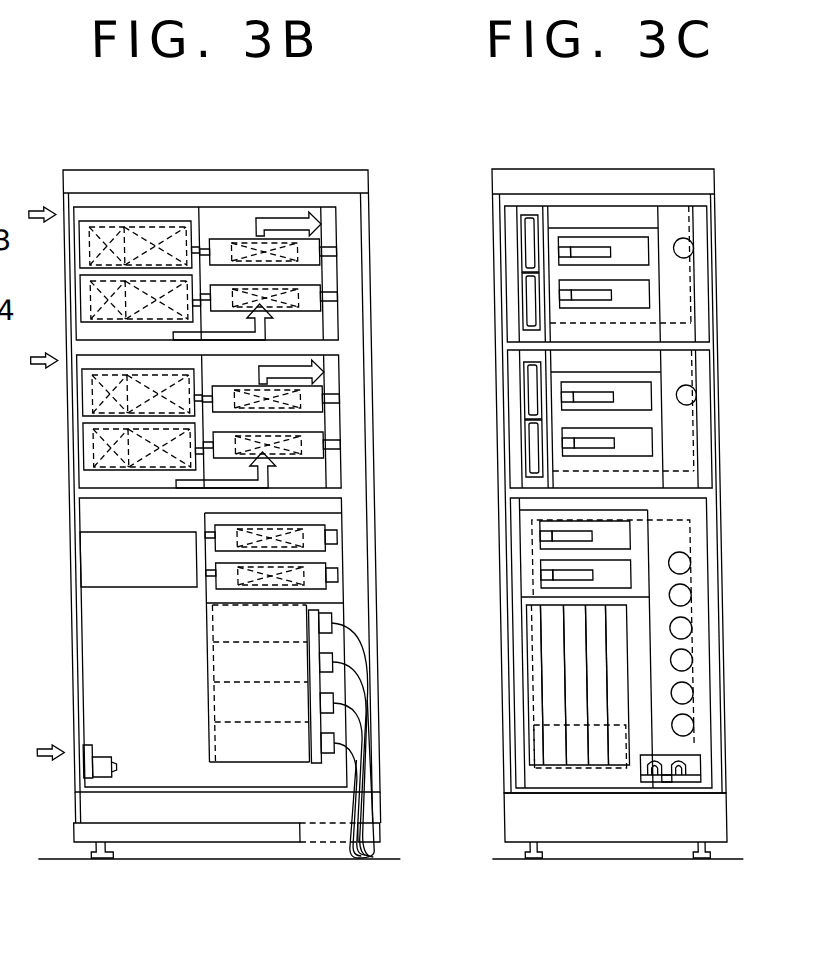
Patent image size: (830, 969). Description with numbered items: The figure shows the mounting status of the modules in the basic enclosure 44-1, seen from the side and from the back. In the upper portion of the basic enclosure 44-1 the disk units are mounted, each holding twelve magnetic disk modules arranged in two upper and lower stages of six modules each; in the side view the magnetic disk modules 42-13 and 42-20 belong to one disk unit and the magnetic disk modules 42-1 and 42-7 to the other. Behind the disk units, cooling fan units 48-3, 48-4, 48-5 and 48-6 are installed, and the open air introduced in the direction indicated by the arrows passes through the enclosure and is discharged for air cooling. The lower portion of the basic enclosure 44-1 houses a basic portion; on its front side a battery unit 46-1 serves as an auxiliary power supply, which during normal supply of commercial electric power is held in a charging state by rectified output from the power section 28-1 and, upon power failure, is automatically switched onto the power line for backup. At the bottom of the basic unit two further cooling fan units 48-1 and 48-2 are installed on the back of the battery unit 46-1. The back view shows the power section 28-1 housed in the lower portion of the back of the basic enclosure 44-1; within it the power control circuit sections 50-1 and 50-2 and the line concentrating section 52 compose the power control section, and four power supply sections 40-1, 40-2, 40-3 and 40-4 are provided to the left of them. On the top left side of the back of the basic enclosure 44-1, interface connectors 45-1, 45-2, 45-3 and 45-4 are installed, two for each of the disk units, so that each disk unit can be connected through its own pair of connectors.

In FIG. 3B, the basic enclosure 44-1 is at (442, 164).
In FIG. 3C, the basic enclosure 44-1 is at (793, 164).
In FIG. 3B, the magnetic disk module 42-13 is at (109, 225).
In FIG. 3B, the magnetic disk module 42-20 is at (80, 295).
In FIG. 3B, the magnetic disk module 42-1 is at (78, 393).
In FIG. 3B, the magnetic disk module 42-7 is at (78, 452).
In FIG. 3B, the cooling fan unit 48-6 is at (314, 252).
In FIG. 3C, the cooling fan unit 48-6 is at (644, 240).
In FIG. 3B, the cooling fan unit 48-5 is at (304, 302).
In FIG. 3C, the cooling fan unit 48-5 is at (637, 293).
In FIG. 3B, the cooling fan unit 48-4 is at (310, 396).
In FIG. 3C, the cooling fan unit 48-4 is at (641, 386).
In FIG. 3B, the cooling fan unit 48-3 is at (307, 443).
In FIG. 3C, the cooling fan unit 48-3 is at (630, 442).
In FIG. 3B, the cooling fan unit 48-1 is at (312, 538).
In FIG. 3C, the cooling fan unit 48-1 is at (610, 523).
In FIG. 3B, the cooling fan unit 48-2 is at (314, 575).
In FIG. 3C, the cooling fan unit 48-2 is at (609, 558).
In FIG. 3B, the battery unit 46-1 is at (129, 564).
In FIG. 3B, the power section 28-1 is at (241, 727).
In FIG. 3C, the power section 28-1 is at (518, 683).
In FIG. 3C, the interface connector 45-4 is at (522, 231).
In FIG. 3C, the interface connector 45-3 is at (521, 290).
In FIG. 3C, the interface connector 45-2 is at (521, 378).
In FIG. 3C, the interface connector 45-1 is at (521, 447).
In FIG. 3C, the power control circuit section 50-1 is at (604, 621).
In FIG. 3C, the power supply section 40-1 is at (524, 724).
In FIG. 3C, the power supply section 40-2 is at (547, 742).
In FIG. 3C, the power supply section 40-3 is at (567, 744).
In FIG. 3C, the power supply section 40-4 is at (586, 746).
In FIG. 3C, the line concentrating section 52 is at (598, 672).
In FIG. 3C, the power control circuit section 50-2 is at (602, 722).